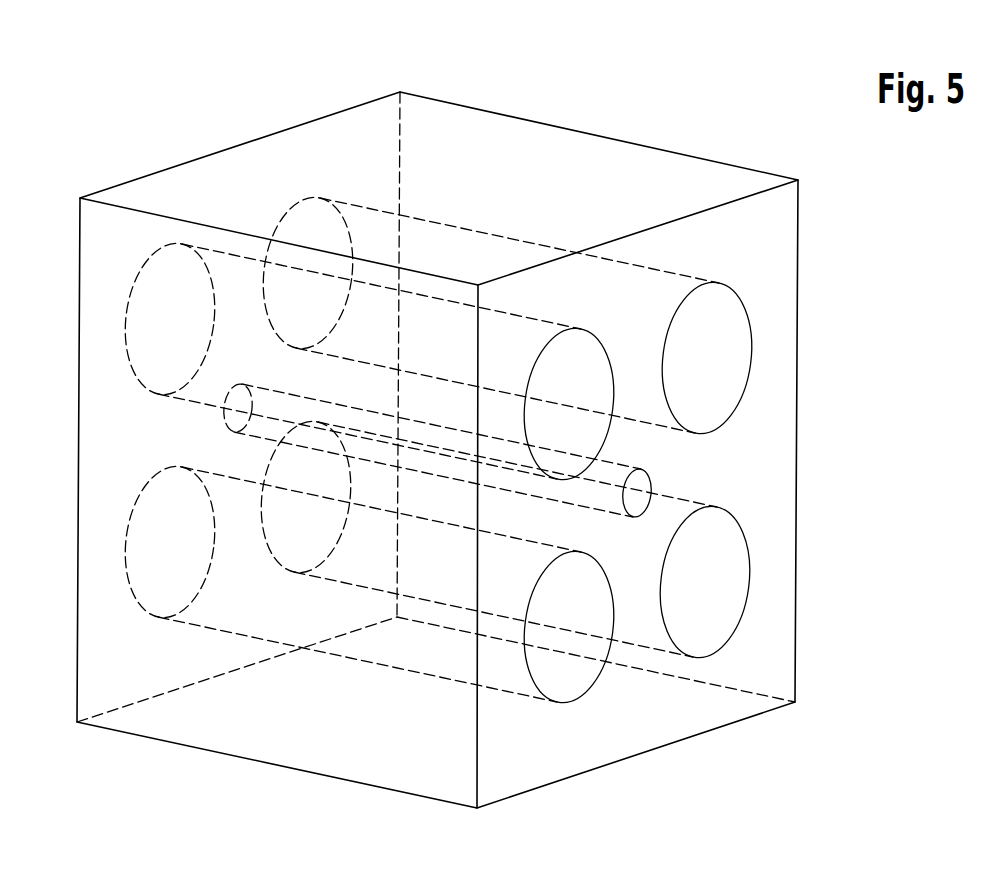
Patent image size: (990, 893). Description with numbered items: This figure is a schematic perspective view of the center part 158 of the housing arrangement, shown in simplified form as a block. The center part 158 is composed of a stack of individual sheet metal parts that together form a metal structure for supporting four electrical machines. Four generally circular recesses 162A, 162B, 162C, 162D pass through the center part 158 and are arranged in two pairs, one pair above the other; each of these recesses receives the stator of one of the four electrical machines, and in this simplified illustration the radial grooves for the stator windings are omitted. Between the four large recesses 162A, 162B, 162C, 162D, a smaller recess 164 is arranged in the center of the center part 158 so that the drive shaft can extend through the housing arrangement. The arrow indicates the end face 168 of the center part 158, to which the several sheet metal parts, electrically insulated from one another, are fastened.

The central part 158 is at (568, 148).
The recess 162A is at (715, 347).
The recess 162B is at (575, 665).
The recess 162C is at (710, 616).
The recess 162D is at (570, 378).
The recess 164 is at (642, 490).
The end face 168 is at (775, 431).